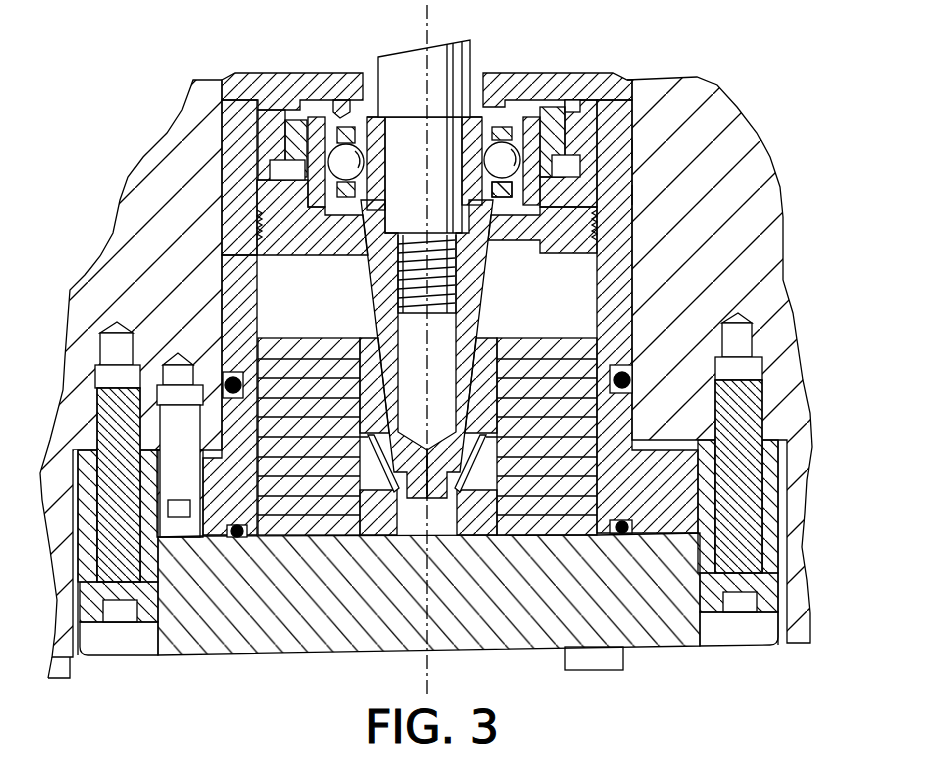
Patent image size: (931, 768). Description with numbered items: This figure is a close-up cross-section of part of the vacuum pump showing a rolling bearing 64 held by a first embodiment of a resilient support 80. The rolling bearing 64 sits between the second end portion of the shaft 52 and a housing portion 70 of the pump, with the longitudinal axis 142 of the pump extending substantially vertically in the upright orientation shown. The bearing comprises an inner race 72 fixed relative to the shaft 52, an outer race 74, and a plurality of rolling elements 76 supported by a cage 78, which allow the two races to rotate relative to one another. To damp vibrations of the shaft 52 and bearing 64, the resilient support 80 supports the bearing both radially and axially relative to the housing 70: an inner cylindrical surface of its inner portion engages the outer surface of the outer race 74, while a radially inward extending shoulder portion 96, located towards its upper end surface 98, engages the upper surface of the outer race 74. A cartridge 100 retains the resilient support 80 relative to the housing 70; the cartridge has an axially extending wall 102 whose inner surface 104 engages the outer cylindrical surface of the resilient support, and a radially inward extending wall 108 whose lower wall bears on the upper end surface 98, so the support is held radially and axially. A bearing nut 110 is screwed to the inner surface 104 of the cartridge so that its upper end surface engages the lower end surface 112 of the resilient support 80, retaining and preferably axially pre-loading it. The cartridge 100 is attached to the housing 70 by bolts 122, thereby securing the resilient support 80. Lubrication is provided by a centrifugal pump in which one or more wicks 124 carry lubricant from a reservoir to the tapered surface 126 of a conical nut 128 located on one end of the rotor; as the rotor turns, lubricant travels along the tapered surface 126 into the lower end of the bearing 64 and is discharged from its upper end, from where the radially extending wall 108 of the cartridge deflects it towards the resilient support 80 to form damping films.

The shaft 52 is at (398, 62).
The rolling bearing 64 is at (340, 118).
The housing portion 70 is at (695, 80).
The inner race 72 is at (474, 200).
The outer race 74 is at (523, 100).
The rolling elements 76 is at (490, 165).
The cage 78 is at (500, 196).
The resilient support 80 is at (630, 150).
The shoulder portion 96 is at (548, 108).
The upper end surface 98 is at (262, 112).
The cartridge 100 is at (604, 62).
The axially extending wall 102 is at (232, 162).
The inner surface 104 is at (252, 108).
The radially inward extending wall 108 is at (498, 84).
The bearing nut 110 is at (567, 240).
The lower end surface 112 is at (630, 197).
The bolts 122 is at (195, 512).
The wicks 124 is at (348, 397).
The tapered surface 126 is at (366, 273).
The conical nut 128 is at (468, 311).
The longitudinal axis 142 is at (425, 688).